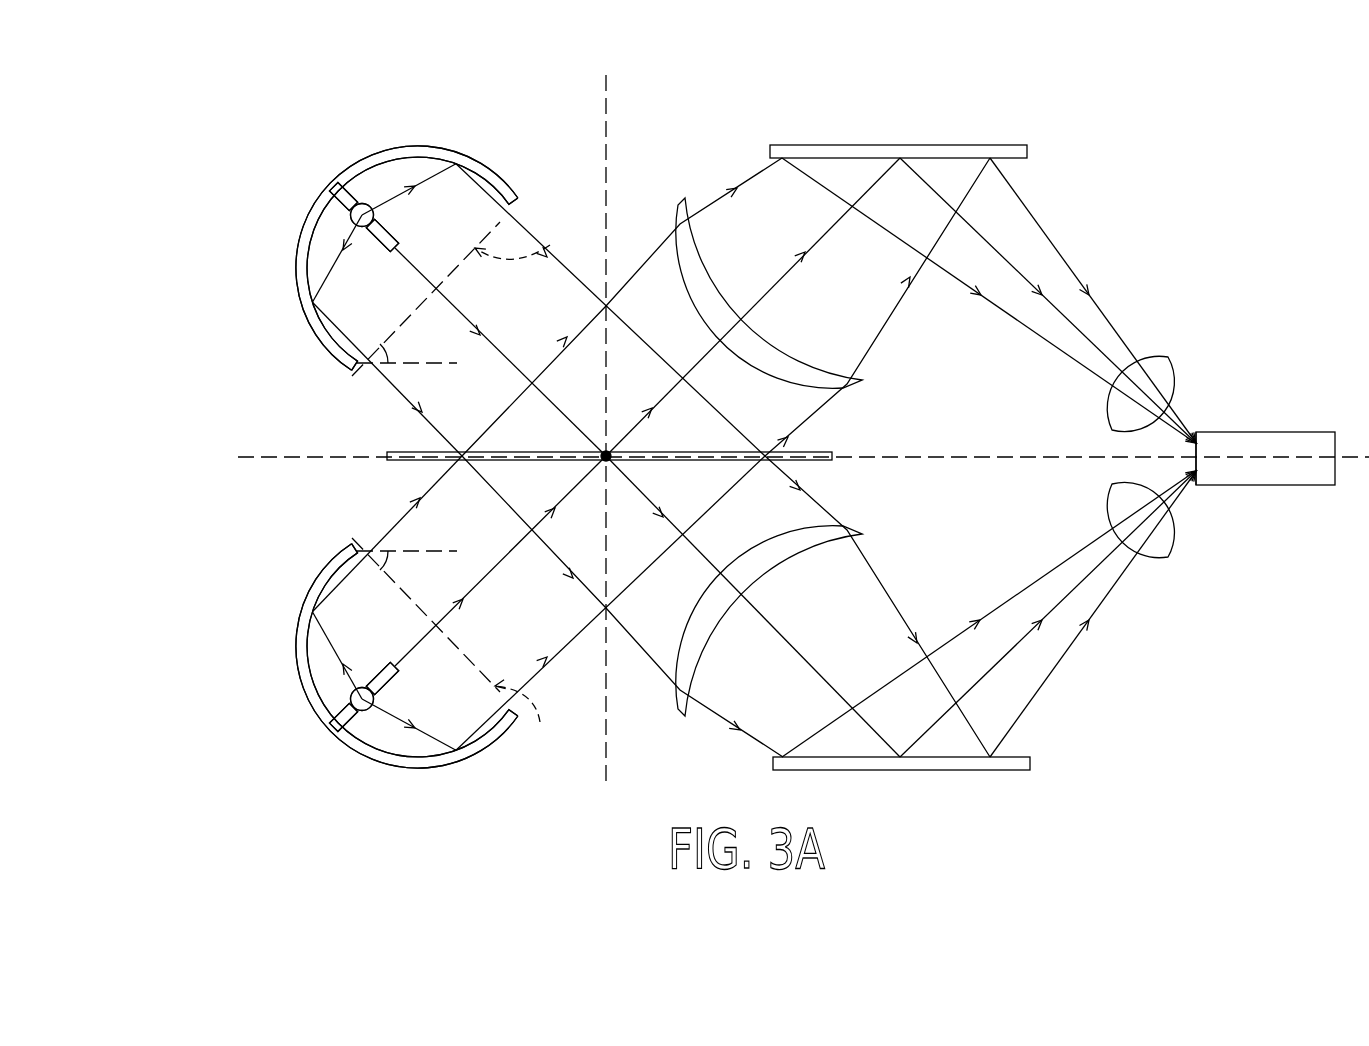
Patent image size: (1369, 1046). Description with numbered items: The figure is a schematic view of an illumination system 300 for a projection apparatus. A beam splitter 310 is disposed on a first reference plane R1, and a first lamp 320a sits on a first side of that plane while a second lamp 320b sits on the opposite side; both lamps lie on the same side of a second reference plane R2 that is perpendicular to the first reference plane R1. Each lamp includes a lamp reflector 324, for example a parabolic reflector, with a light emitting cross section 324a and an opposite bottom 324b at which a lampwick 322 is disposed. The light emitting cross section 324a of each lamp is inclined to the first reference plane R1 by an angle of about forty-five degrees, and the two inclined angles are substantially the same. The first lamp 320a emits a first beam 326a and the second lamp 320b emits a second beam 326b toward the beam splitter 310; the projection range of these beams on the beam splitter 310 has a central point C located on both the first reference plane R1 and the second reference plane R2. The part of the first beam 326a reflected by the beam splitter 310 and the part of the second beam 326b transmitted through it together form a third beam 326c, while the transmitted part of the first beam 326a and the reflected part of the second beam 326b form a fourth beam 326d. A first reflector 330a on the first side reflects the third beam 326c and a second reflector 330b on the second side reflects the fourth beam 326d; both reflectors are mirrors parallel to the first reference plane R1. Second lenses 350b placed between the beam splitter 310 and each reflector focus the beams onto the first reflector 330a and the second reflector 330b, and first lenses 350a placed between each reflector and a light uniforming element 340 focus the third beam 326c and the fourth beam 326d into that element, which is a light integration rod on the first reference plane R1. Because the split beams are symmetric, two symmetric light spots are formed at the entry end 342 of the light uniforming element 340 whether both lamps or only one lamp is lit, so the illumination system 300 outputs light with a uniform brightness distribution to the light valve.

The illumination system 300 is at (1245, 811).
The beam splitter 310 is at (423, 460).
The first lamp 320a is at (428, 91).
The second lamp 320b is at (252, 740).
The lampwick 322 is at (365, 204).
The lamp reflector 324 is at (407, 147).
The light emitting cross section 324a is at (550, 245).
The bottom 324b is at (302, 235).
The first beam 326a is at (557, 258).
The second beam 326b is at (558, 657).
The third beam 326c is at (640, 265).
The fourth beam 326d is at (648, 656).
The first reflector 330a is at (845, 145).
The second reflector 330b is at (1030, 766).
The light uniforming element 340 is at (1260, 440).
The entry end 342 is at (1203, 468).
The first lenses 350a is at (1170, 360).
The second lenses 350b is at (683, 200).
The first reference plane R1 is at (1360, 450).
The second reference plane R2 is at (604, 105).
The central point C is at (606, 452).